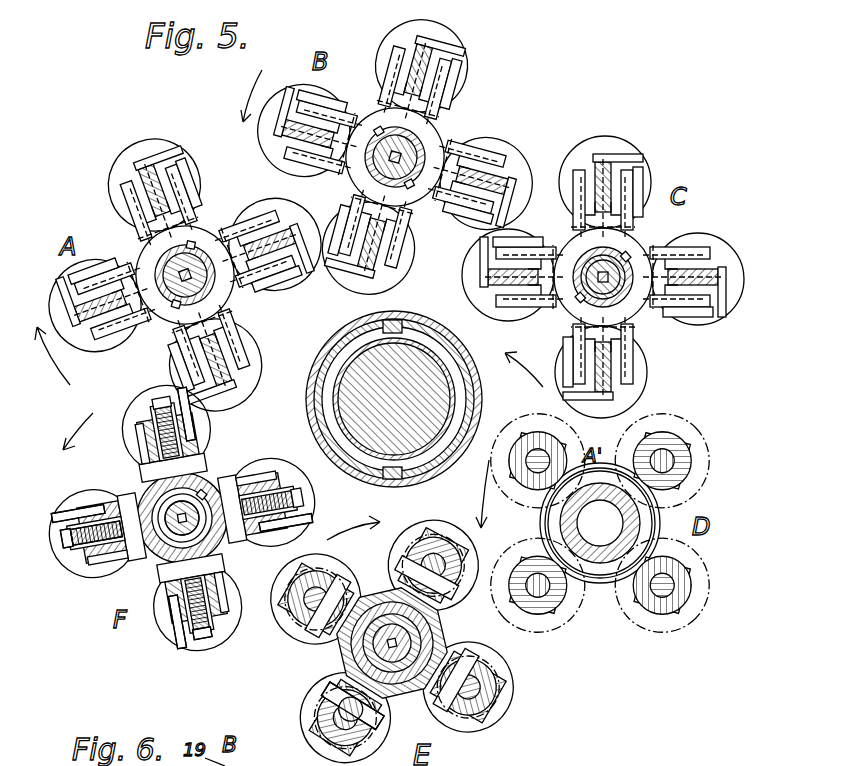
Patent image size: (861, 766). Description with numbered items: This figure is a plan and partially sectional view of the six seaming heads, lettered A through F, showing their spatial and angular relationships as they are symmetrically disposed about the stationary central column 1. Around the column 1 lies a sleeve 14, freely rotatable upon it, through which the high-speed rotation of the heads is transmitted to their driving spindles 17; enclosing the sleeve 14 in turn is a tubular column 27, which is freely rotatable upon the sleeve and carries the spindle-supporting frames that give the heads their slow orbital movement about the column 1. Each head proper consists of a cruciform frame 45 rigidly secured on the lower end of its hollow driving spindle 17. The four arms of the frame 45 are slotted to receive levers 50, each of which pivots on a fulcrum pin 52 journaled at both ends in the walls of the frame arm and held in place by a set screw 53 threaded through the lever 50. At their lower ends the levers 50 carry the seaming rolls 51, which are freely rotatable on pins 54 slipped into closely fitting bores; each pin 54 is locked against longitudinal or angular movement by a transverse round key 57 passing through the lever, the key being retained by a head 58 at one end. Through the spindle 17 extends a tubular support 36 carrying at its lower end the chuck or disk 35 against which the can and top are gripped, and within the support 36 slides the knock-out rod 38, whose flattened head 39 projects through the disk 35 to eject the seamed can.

The central column 1 is at (394, 399).
The sleeve 14 is at (449, 372).
The tubular column 27 is at (372, 478).
The driving spindle 17 is at (414, 140).
The lever 50 is at (405, 78).
The cruciform frame 45 is at (165, 185).
The tubular support 36 is at (625, 262).
The knock-out rod 38 is at (618, 300).
The chuck or disk 35 is at (645, 540).
The flattened head 39 is at (608, 535).
The pin 54 is at (662, 600).
The seaming roll 51 is at (262, 470).
The fulcrum pin 52 is at (90, 515).
The set screw 53 is at (70, 545).
The transverse round key 57 is at (330, 690).
The head 58 is at (330, 716).